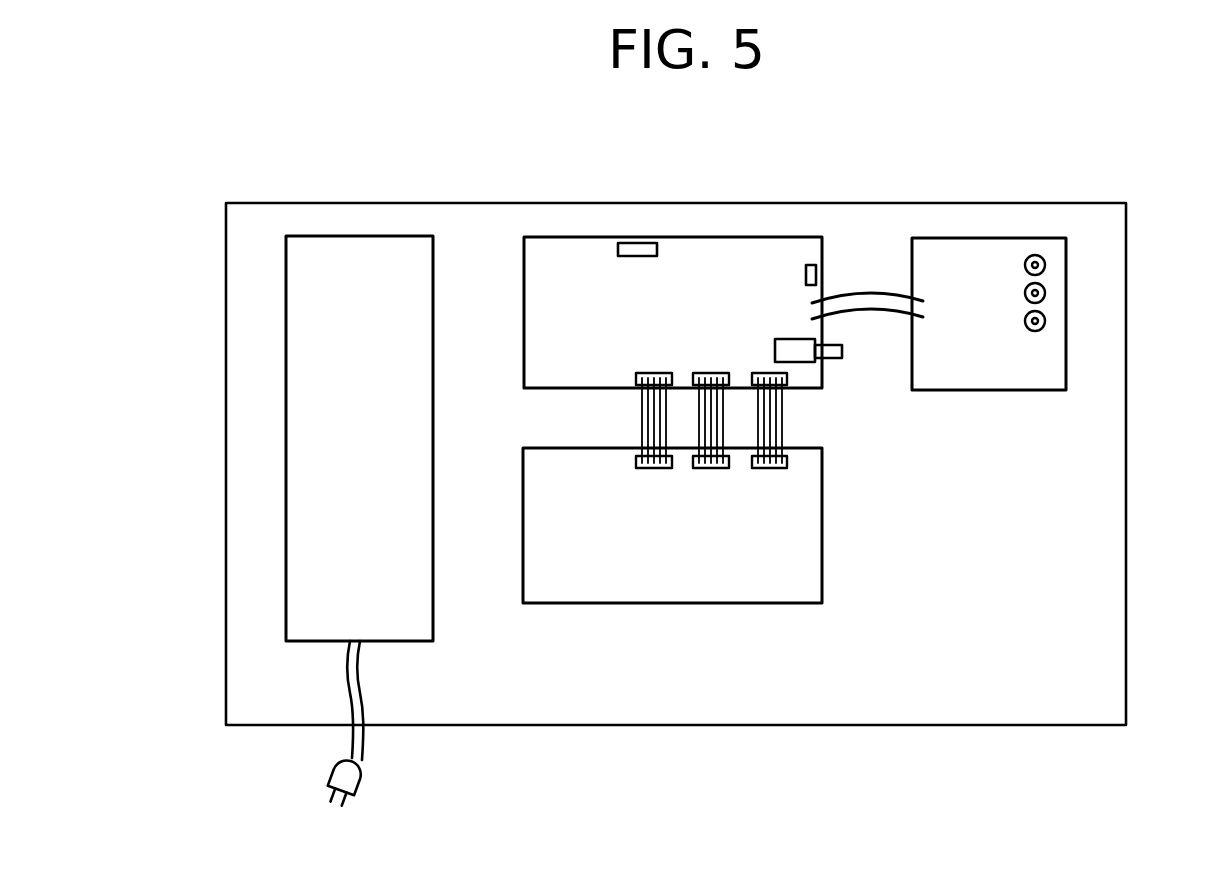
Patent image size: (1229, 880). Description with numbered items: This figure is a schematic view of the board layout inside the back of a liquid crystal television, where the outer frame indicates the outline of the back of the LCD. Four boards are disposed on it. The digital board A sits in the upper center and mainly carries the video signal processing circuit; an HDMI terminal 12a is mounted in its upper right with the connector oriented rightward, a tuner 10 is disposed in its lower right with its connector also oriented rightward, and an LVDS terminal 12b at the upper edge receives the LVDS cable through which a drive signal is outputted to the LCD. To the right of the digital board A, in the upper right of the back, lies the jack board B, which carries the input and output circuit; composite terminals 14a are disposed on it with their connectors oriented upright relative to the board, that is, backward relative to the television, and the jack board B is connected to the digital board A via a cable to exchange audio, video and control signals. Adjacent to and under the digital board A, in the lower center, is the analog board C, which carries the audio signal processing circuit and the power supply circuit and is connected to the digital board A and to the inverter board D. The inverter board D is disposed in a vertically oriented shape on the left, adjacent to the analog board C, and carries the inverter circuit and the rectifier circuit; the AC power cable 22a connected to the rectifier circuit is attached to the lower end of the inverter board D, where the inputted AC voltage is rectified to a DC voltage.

The digital board A is at (688, 237).
The jack board B is at (990, 237).
The analog board C is at (697, 603).
The inverter board D is at (284, 500).
The tuner 10 is at (780, 339).
The HDMI terminal 12a is at (817, 272).
The LVDS terminal 12b is at (633, 248).
The composite terminals 14a is at (1046, 262).
The AC power cable 22a is at (362, 752).